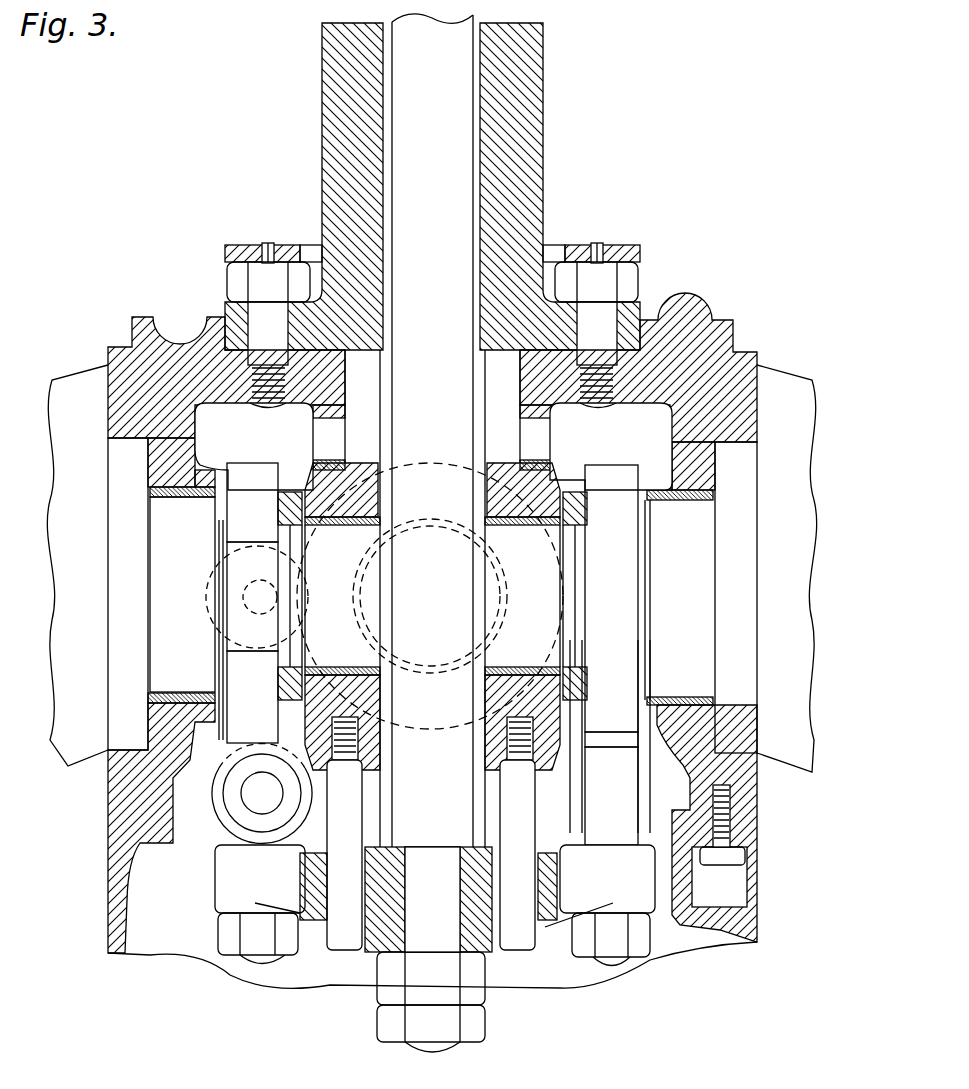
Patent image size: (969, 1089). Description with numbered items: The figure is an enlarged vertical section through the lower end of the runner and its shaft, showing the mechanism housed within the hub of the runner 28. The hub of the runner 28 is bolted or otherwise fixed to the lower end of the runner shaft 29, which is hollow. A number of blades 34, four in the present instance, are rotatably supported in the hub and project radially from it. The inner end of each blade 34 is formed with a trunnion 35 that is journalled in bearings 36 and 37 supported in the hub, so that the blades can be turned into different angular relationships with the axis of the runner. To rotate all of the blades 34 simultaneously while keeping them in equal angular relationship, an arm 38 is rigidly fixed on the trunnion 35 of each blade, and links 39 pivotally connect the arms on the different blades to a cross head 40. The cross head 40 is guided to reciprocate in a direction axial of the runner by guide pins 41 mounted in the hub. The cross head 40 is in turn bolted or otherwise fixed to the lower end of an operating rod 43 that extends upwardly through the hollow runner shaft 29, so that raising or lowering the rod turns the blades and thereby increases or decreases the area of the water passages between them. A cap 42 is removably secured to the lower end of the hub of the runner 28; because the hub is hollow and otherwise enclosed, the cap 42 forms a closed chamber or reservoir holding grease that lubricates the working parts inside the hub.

The runner 28 is at (738, 355).
The runner shaft 29 is at (322, 122).
The blade 34 is at (431, 568).
The trunnion 35 is at (424, 601).
The bearing 36 is at (208, 486).
The bearing 37 is at (355, 485).
The arm 38 is at (238, 623).
The link 39 is at (647, 788).
The cross head 40 is at (378, 942).
The guide pin 41 is at (435, 855).
The cap 42 is at (108, 948).
The operating rod 43 is at (432, 533).